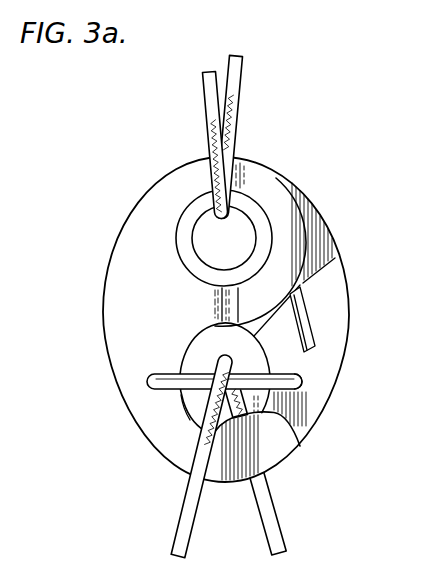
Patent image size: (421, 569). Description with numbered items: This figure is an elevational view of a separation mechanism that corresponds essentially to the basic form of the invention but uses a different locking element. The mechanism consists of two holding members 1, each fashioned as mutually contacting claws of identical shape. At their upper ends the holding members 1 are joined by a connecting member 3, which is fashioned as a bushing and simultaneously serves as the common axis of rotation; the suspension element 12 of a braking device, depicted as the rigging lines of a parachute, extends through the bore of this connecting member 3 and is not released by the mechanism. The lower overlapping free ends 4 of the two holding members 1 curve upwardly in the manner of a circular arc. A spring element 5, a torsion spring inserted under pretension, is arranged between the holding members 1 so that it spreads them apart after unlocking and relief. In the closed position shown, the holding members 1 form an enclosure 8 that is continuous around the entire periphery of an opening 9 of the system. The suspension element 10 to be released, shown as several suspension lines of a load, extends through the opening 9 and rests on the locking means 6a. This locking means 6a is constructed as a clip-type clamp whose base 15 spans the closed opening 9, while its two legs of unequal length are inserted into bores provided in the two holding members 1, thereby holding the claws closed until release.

The holding member 1 is at (118, 250).
The connecting member 3 is at (252, 200).
The free end 4 is at (283, 446).
The spring element 5 is at (306, 310).
The locking means 6a is at (304, 381).
The enclosure 8 is at (185, 410).
The opening 9 is at (210, 347).
The suspension element 10 is at (281, 527).
The suspension element of a braking device 12 is at (241, 80).
The base 15 is at (282, 373).